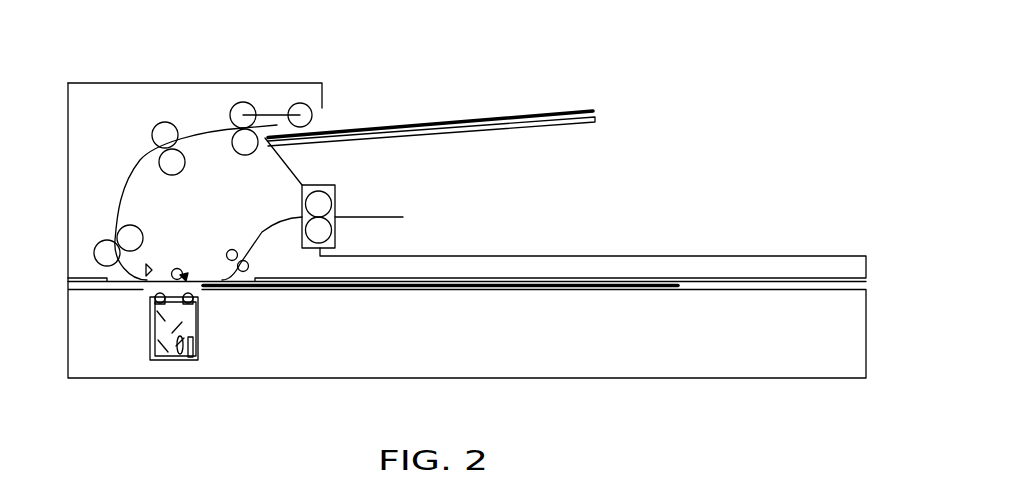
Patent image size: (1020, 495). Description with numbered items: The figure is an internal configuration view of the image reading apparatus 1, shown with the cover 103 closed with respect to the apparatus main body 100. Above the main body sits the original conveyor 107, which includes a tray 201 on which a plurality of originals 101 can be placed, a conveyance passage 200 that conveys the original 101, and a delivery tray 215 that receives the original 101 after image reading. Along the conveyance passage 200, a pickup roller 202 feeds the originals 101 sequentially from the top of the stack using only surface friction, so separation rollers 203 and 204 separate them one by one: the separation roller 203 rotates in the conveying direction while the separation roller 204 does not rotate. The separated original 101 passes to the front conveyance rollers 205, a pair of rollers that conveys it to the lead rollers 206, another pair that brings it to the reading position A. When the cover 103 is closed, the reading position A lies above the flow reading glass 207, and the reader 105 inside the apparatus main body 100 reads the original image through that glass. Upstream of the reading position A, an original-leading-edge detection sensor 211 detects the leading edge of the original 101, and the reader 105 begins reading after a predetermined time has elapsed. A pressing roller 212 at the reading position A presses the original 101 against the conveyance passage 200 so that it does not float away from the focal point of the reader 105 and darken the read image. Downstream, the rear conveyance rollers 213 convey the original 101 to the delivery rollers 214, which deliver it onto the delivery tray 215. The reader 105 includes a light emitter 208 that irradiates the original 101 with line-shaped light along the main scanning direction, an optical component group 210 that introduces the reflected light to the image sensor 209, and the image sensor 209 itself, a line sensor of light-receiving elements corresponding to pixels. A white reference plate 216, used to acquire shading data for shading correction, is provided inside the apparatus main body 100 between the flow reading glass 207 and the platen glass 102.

The image reading apparatus 1 is at (647, 38).
The apparatus main body 100 is at (867, 325).
The original 101 is at (493, 115).
The platen glass 102 is at (432, 290).
The cover 103 is at (67, 278).
The reader 105 is at (152, 362).
The original conveyor 107 is at (97, 82).
The conveyance passage 200 is at (122, 177).
The tray 201 is at (594, 123).
The pickup roller 202 is at (323, 108).
The separation roller 203 is at (247, 100).
The separation roller 204 is at (237, 152).
The front conveyance rollers 205 is at (153, 133).
The lead rollers 206 is at (100, 243).
The flow reading glass 207 is at (142, 292).
The light emitter 208 is at (200, 297).
The image sensor 209 is at (192, 362).
The optical component group 210 is at (200, 333).
The original-leading-edge detection sensor 211 is at (149, 264).
The pressing roller 212 is at (177, 267).
The rear conveyance rollers 213 is at (233, 248).
The delivery rollers 214 is at (335, 192).
The delivery tray 215 is at (698, 256).
The white reference plate 216 is at (245, 290).
The reading position A is at (186, 273).